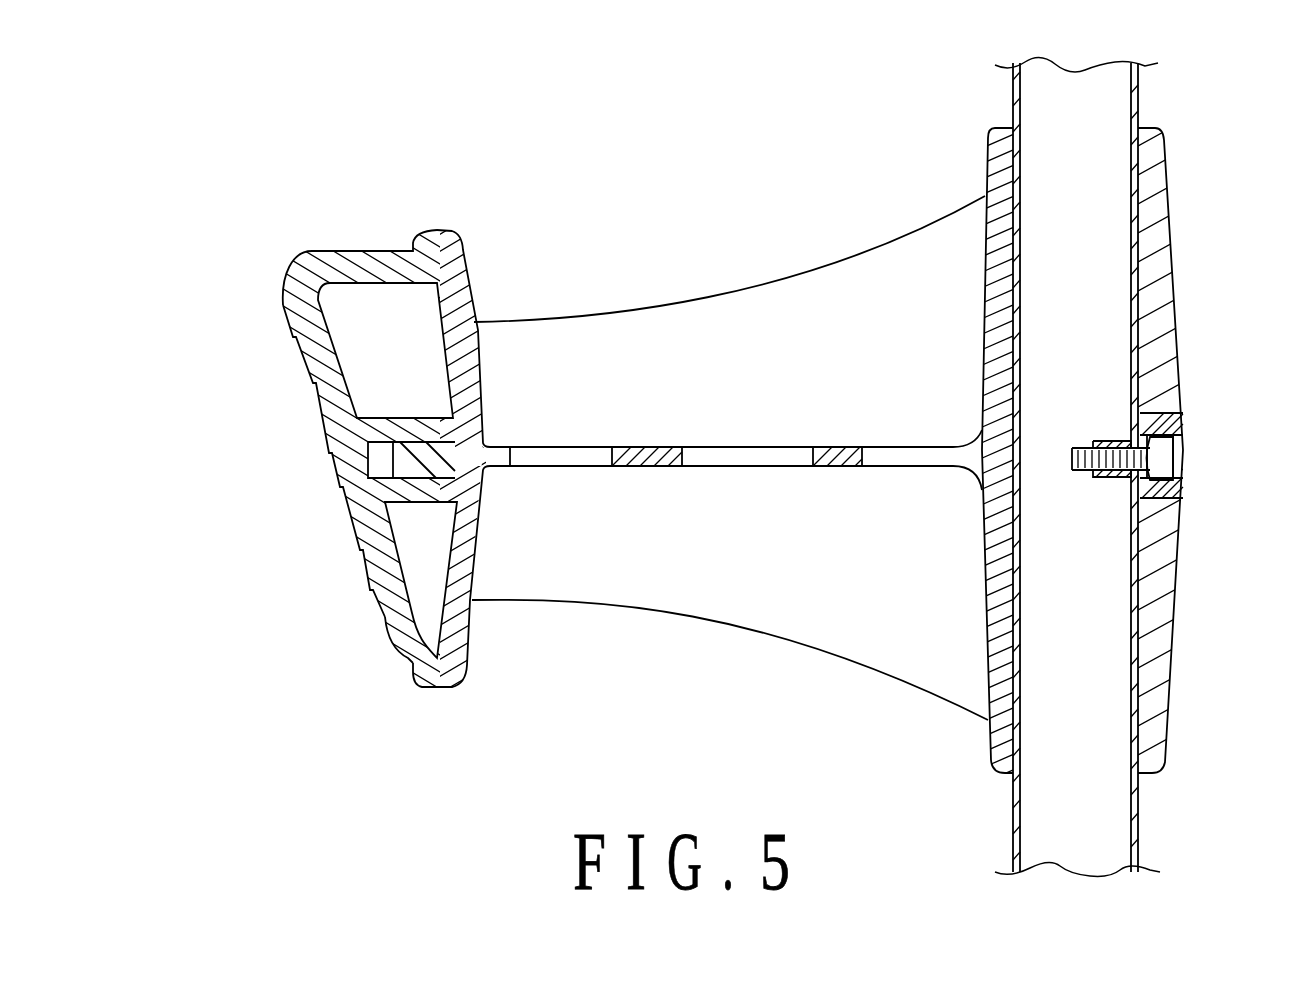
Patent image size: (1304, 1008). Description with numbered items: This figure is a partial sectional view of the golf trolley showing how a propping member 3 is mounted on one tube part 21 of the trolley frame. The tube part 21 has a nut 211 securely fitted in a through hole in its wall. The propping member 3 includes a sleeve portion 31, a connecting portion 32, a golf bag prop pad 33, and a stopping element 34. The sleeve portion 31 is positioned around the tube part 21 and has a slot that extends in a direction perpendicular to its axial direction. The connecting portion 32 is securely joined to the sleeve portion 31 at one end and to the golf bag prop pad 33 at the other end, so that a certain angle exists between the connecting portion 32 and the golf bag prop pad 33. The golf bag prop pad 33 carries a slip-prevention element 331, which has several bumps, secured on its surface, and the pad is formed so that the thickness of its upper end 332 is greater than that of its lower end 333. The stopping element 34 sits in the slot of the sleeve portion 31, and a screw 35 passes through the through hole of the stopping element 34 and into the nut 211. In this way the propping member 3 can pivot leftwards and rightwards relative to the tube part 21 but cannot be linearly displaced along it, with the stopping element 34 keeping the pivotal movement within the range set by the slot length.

The propping member 3 is at (678, 273).
The tube part 21 is at (1145, 832).
The nut 211 is at (1100, 478).
The sleeve portion 31 is at (1160, 318).
The connecting portion 32 is at (745, 586).
The golf bag prop pad 33 is at (268, 660).
The slip-prevention element 331 is at (297, 366).
The upper end 332 is at (302, 273).
The lower end 333 is at (400, 641).
The stopping element 34 is at (1183, 485).
The screw 35 is at (1160, 460).